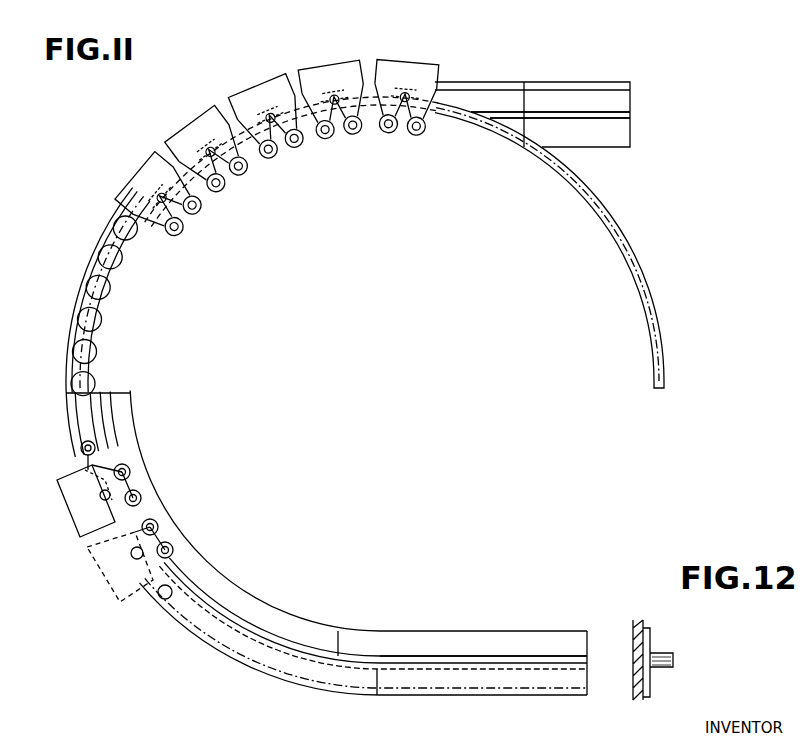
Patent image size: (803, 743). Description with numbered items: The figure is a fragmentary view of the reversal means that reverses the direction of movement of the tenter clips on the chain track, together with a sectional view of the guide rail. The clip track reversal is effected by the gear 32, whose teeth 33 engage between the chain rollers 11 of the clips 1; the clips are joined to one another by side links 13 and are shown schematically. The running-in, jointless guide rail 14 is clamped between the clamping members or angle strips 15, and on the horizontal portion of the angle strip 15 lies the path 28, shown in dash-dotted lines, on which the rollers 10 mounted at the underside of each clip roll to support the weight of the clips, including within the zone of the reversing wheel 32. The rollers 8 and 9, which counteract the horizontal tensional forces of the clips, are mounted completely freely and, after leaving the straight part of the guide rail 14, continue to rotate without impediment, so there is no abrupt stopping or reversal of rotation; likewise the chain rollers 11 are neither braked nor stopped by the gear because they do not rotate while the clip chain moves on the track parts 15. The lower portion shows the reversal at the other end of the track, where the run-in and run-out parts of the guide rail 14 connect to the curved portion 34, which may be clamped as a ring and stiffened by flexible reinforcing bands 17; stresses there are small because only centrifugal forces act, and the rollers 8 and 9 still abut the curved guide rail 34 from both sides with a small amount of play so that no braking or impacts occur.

In FIG. 11, the clip 1 is at (173, 127).
In FIG. 11, the roller 8 is at (215, 157).
In FIG. 11, the roller 9 is at (240, 158).
In FIG. 11, the roller 10 is at (192, 113).
In FIG. 11, the chain roller 11 is at (218, 150).
In FIG. 11, the side link 13 is at (185, 175).
In FIG. 11, the guide rail 14 is at (630, 114).
In FIG. 12, the guide rail 14 is at (675, 657).
In FIG. 11, the angle strip 15 is at (573, 103).
In FIG. 12, the angle strip 15 is at (660, 650).
In FIG. 11, the reinforcing band 17 is at (340, 653).
In FIG. 11, the path 28 is at (488, 82).
In FIG. 11, the gear 32 is at (612, 270).
In FIG. 11, the teeth 33 is at (97, 320).
In FIG. 11, the curved portion 34 is at (227, 623).